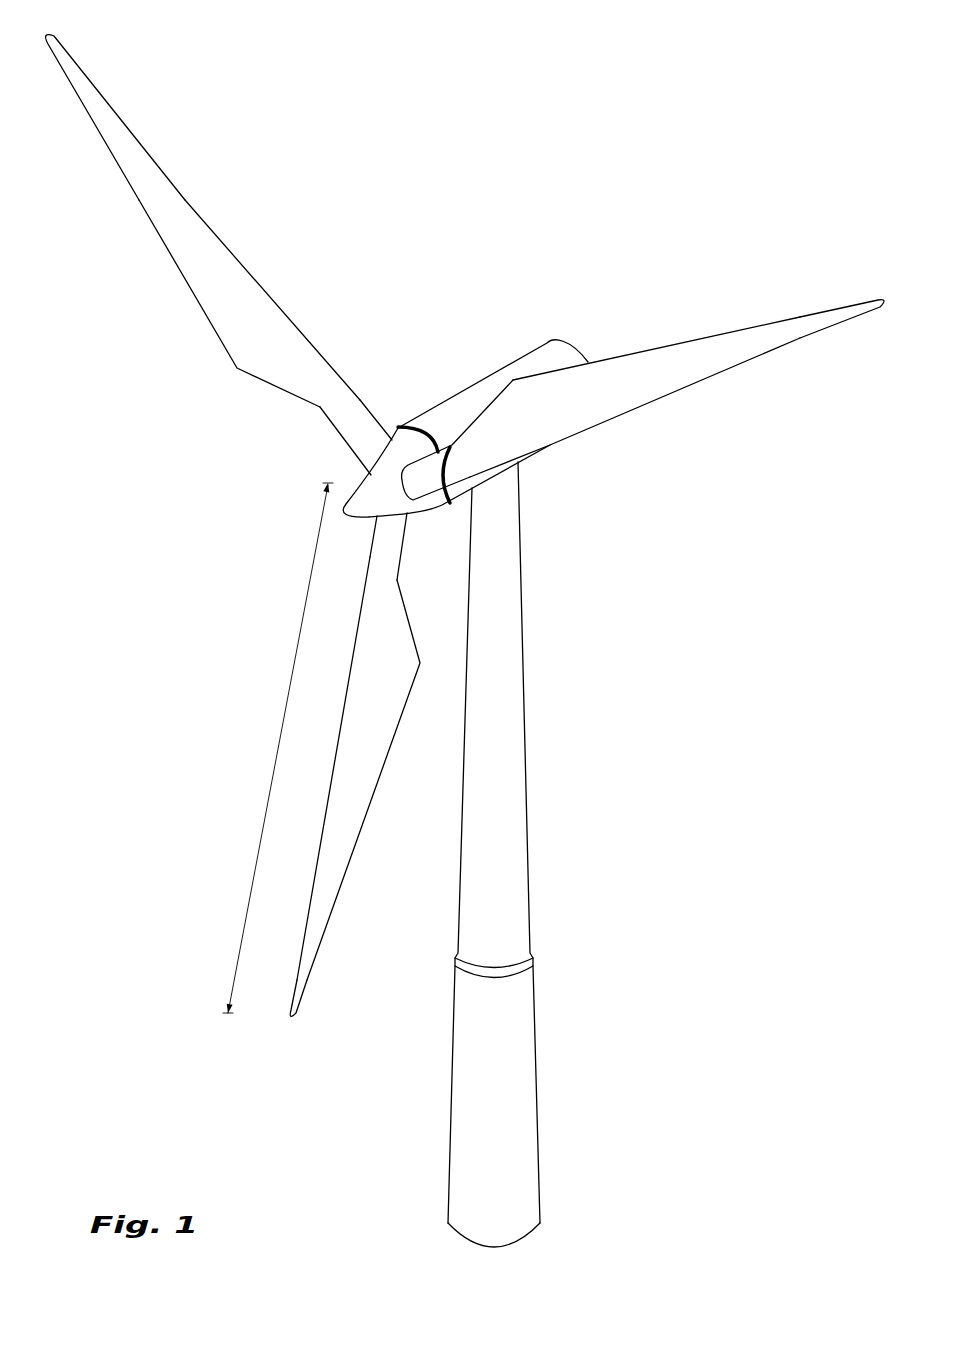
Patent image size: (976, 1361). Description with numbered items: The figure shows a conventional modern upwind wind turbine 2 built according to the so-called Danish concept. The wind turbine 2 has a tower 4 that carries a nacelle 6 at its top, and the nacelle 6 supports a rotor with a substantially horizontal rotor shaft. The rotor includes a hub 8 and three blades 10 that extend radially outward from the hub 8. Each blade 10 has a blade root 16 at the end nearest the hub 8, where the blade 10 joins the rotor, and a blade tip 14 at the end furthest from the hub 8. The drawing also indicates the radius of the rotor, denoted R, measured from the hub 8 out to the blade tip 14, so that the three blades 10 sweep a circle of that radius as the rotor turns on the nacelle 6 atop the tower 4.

The wind turbine 2 is at (636, 790).
The tower 4 is at (513, 712).
The nacelle 6 is at (458, 407).
The hub 8 is at (358, 486).
The blade 10 is at (250, 338).
The blade tip 14 is at (88, 93).
The blade root 16 is at (370, 447).